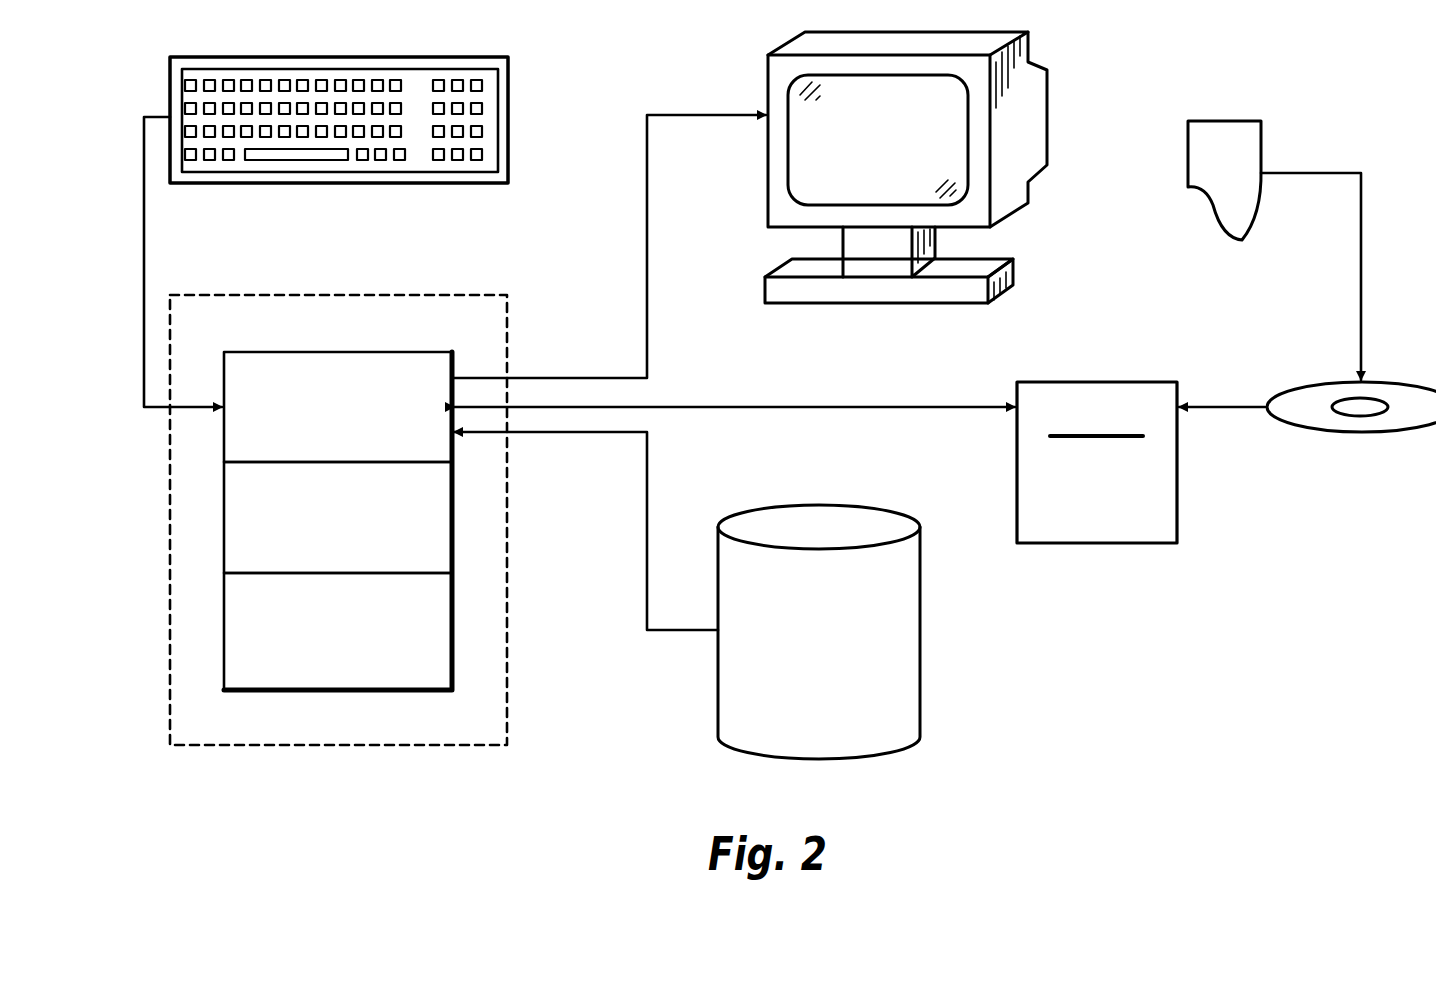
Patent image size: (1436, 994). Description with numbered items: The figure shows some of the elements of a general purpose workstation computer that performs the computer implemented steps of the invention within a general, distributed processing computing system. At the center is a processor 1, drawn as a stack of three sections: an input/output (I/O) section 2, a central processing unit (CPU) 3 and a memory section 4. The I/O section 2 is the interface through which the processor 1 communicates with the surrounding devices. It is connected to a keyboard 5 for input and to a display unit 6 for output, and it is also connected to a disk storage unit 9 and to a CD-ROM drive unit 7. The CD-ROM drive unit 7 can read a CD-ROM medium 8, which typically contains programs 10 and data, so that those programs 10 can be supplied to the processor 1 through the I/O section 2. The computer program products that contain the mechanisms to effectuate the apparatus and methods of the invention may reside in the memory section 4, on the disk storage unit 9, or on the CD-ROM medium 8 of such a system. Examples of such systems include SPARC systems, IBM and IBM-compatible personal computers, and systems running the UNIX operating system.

The processor 1 is at (457, 292).
The input/output (I/O) section 2 is at (317, 352).
The central processing unit (CPU) 3 is at (453, 535).
The memory section 4 is at (453, 673).
The keyboard 5 is at (487, 58).
The display unit 6 is at (975, 42).
The CD-ROM drive unit 7 is at (1048, 382).
The CD-ROM medium 8 is at (1335, 385).
The disk storage unit 9 is at (917, 603).
The programs 10 is at (1205, 130).